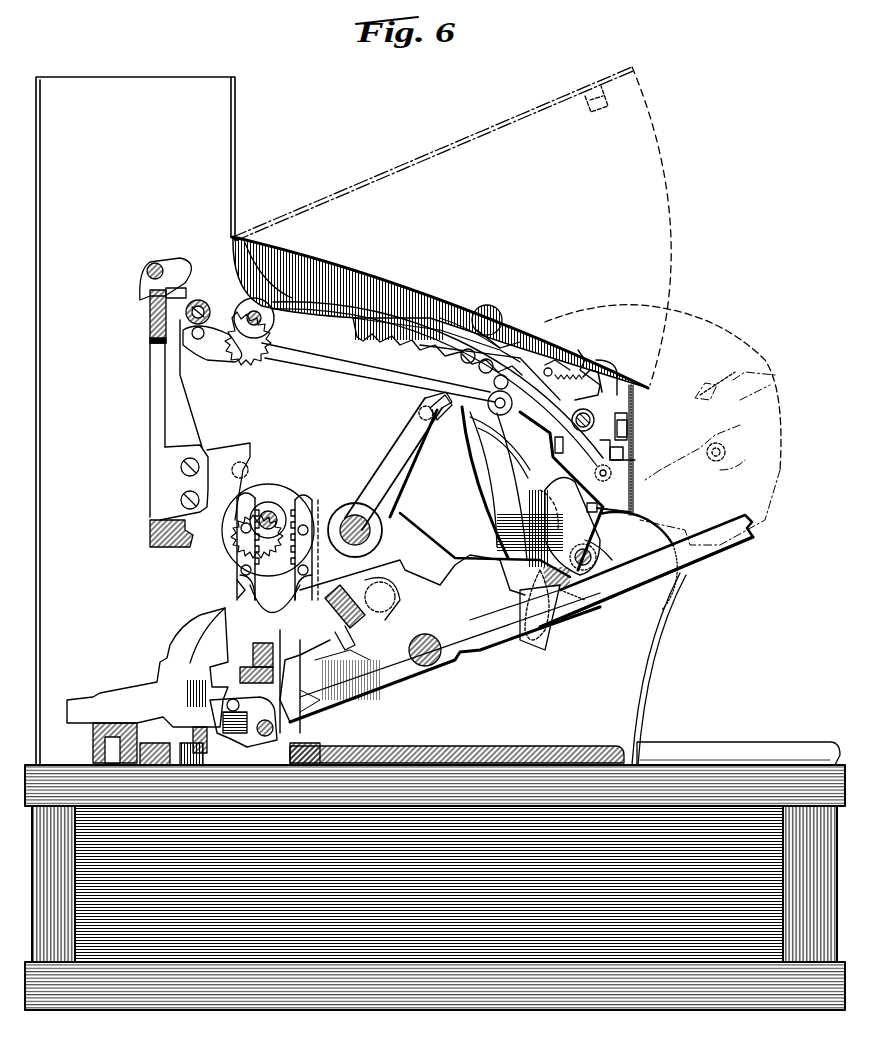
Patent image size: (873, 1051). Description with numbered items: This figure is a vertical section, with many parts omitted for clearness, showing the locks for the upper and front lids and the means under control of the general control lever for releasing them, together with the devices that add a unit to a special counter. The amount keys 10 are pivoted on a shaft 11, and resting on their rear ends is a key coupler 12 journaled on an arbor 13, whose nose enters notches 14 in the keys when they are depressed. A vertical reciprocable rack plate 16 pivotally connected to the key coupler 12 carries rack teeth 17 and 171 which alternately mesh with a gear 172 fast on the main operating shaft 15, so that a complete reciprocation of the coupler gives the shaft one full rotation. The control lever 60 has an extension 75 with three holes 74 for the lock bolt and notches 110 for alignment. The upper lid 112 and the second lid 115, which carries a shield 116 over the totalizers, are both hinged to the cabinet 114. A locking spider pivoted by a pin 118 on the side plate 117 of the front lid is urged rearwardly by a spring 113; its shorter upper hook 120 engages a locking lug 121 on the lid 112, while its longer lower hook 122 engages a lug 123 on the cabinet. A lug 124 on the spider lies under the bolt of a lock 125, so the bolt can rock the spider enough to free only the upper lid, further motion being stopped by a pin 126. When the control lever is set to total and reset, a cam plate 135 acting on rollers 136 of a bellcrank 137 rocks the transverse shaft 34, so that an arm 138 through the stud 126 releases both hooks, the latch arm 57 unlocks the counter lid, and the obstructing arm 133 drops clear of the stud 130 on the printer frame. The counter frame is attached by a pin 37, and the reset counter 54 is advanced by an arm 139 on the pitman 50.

The amount keys 10 is at (724, 548).
The shaft 11 is at (432, 652).
The key coupler 12 is at (340, 606).
The arbor 13 is at (378, 588).
The notches 14 is at (207, 677).
The main operating shaft 15 is at (285, 503).
The rack plate 16 is at (258, 618).
The rack teeth 17 is at (318, 520).
The transverse shaft 34 is at (598, 570).
The pin 37 is at (198, 300).
The pitman 50 is at (368, 356).
The reset counter 54 is at (312, 268).
The latch arm 57 is at (590, 528).
The control lever 60 is at (497, 312).
The holes 74 is at (455, 357).
The extension 75 is at (450, 335).
The notches 110 is at (432, 346).
The lid 112 is at (385, 305).
The spring 113 is at (575, 345).
The cabinet 114 is at (240, 235).
The second lid 115 is at (660, 470).
The shield 116 is at (542, 355).
The side plate 117 is at (635, 396).
The pin 118 is at (580, 407).
The hook 120 is at (598, 383).
The locking lug 121 is at (590, 365).
The hook 122 is at (487, 470).
The lug 123 is at (565, 491).
The lug 124 is at (633, 428).
The lock 125 is at (632, 415).
The pin 126 is at (638, 495).
The stud 130 is at (418, 413).
The obstructing arm 133 is at (493, 495).
The cam plate 135 is at (528, 585).
The rollers 136 is at (555, 595).
The bellcrank 137 is at (565, 580).
The arm 138 is at (618, 517).
The arm 139 is at (493, 483).
The rack teeth 171 is at (240, 588).
The gear 172 is at (245, 553).